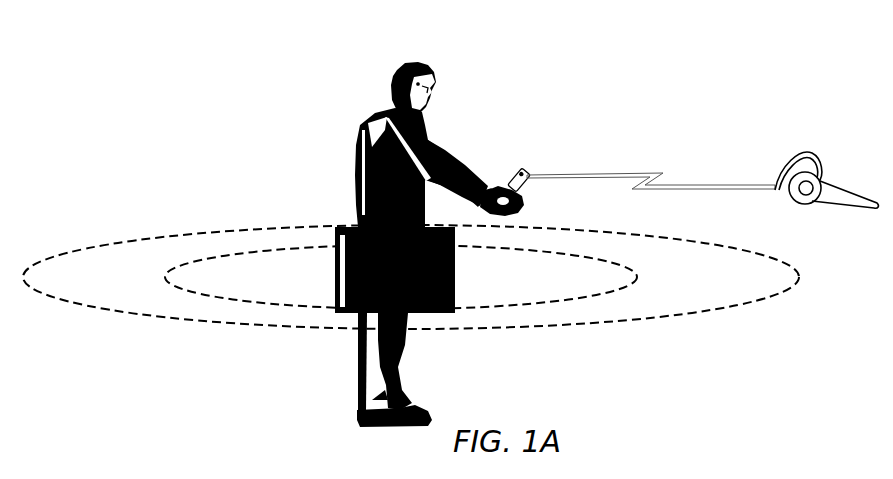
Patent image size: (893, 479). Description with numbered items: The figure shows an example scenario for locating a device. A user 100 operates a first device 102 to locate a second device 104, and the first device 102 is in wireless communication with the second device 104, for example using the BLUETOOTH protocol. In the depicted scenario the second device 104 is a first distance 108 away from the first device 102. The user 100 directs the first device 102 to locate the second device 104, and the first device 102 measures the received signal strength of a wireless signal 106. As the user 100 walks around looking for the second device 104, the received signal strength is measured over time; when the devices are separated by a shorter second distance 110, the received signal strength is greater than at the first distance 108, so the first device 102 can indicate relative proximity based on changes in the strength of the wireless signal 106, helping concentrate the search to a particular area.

The user 100 is at (425, 63).
The first device 102 is at (520, 172).
The second device 104 is at (815, 165).
The wireless signal 106 is at (650, 172).
The first distance 108 is at (775, 300).
The second distance 110 is at (615, 290).